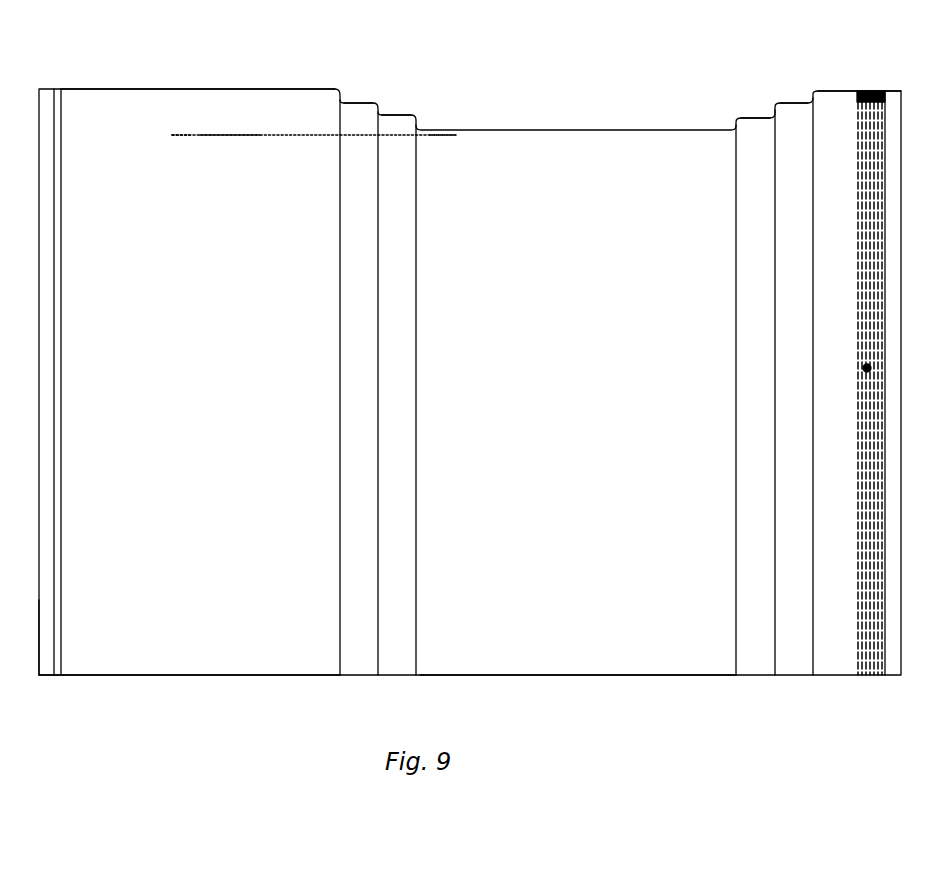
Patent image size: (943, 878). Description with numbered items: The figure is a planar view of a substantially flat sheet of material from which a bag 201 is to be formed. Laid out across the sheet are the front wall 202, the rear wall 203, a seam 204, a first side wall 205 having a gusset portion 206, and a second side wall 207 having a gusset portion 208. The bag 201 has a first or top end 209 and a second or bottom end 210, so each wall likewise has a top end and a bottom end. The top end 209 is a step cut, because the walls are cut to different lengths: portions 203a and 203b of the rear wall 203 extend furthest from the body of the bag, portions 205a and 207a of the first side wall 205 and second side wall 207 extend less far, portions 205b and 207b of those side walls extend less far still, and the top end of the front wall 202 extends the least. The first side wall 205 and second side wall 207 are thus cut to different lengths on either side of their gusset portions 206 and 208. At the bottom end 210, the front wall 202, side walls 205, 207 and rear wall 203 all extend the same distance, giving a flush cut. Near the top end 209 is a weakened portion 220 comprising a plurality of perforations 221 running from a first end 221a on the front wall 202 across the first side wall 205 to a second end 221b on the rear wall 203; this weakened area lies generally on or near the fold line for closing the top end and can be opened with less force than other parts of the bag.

The bag 201 is at (530, 65).
The front wall 202 is at (552, 655).
The rear wall 203 is at (197, 647).
The portion of rear wall 203a is at (233, 97).
The portion of rear wall 203b is at (835, 100).
The seam 204 is at (865, 533).
The first side wall 205 is at (391, 363).
The portion of first side wall 205a is at (357, 108).
The portion of first side wall 205b is at (400, 123).
The gusset portion 206 is at (377, 418).
The second side wall 207 is at (760, 374).
The portion of second side wall 207a is at (788, 110).
The portion of second side wall 207b is at (747, 125).
The gusset portion 208 is at (775, 430).
The top end 209 is at (46, 63).
The bottom end 210 is at (33, 681).
The weakened portion 220 is at (289, 150).
The perforations 221 is at (227, 135).
The first end of perforations 221a is at (458, 137).
The second end of perforations 221b is at (170, 135).